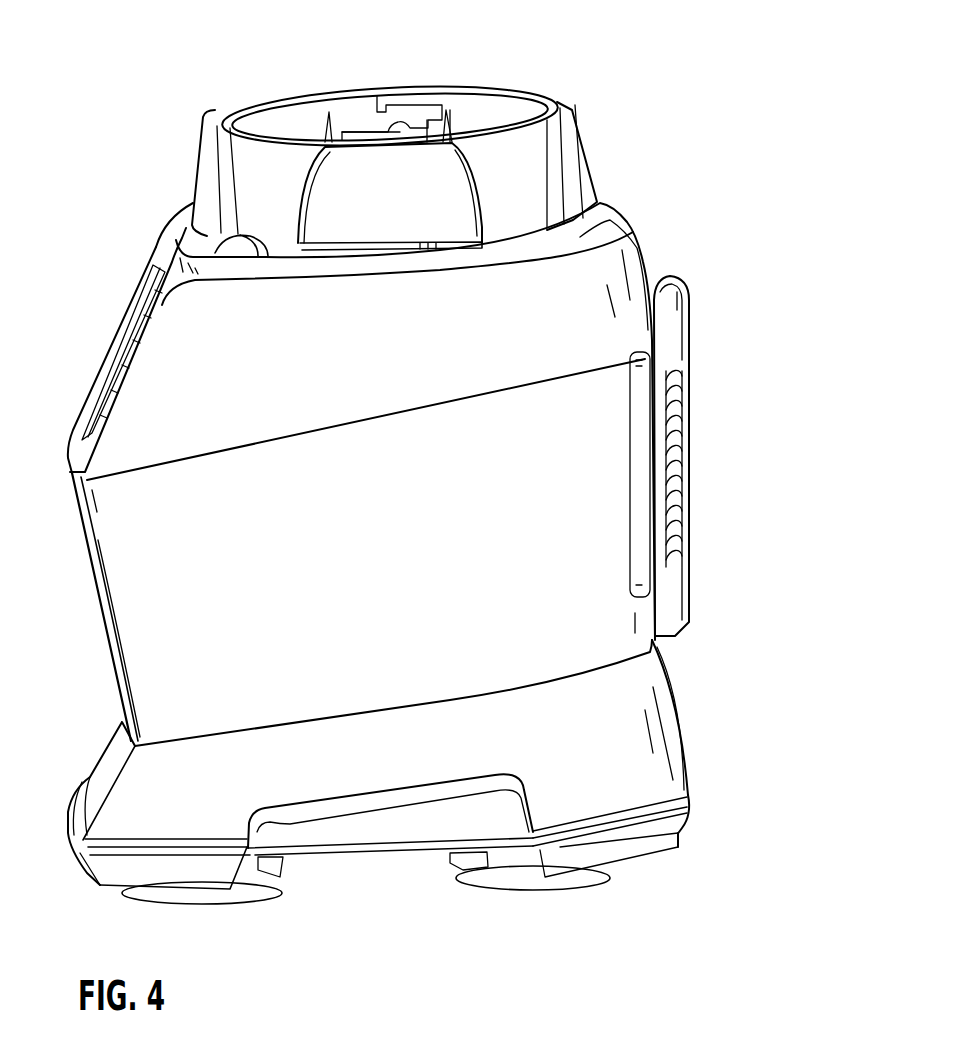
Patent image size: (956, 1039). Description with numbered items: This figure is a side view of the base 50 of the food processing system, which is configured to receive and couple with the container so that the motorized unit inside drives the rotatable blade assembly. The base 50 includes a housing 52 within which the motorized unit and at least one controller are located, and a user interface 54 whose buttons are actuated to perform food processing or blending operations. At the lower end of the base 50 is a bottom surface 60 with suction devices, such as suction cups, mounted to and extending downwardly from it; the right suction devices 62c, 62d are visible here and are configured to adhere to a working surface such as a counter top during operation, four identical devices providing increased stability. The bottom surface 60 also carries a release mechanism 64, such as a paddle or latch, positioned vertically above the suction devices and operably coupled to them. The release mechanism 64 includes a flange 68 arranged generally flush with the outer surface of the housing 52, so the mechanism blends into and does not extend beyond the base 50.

The base 50 is at (722, 146).
The housing 52 is at (571, 503).
The user interface 54 is at (123, 344).
The bottom surface 60 is at (690, 818).
The front right suction device 62c is at (245, 886).
The back right suction device 62d is at (517, 873).
The release mechanism 64 is at (369, 855).
The flange 68 is at (418, 830).